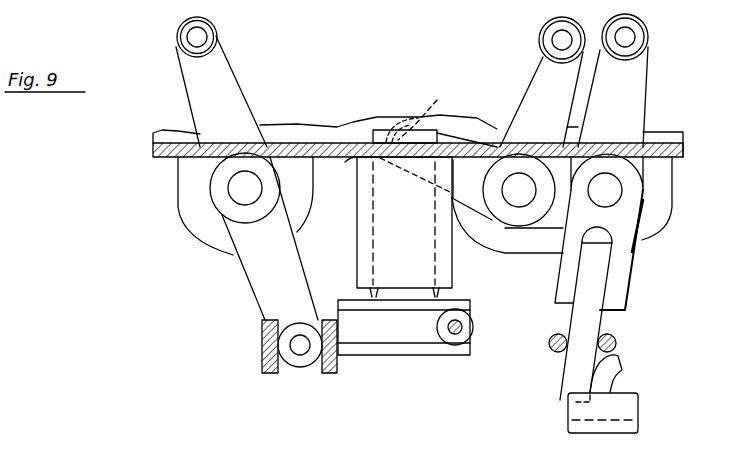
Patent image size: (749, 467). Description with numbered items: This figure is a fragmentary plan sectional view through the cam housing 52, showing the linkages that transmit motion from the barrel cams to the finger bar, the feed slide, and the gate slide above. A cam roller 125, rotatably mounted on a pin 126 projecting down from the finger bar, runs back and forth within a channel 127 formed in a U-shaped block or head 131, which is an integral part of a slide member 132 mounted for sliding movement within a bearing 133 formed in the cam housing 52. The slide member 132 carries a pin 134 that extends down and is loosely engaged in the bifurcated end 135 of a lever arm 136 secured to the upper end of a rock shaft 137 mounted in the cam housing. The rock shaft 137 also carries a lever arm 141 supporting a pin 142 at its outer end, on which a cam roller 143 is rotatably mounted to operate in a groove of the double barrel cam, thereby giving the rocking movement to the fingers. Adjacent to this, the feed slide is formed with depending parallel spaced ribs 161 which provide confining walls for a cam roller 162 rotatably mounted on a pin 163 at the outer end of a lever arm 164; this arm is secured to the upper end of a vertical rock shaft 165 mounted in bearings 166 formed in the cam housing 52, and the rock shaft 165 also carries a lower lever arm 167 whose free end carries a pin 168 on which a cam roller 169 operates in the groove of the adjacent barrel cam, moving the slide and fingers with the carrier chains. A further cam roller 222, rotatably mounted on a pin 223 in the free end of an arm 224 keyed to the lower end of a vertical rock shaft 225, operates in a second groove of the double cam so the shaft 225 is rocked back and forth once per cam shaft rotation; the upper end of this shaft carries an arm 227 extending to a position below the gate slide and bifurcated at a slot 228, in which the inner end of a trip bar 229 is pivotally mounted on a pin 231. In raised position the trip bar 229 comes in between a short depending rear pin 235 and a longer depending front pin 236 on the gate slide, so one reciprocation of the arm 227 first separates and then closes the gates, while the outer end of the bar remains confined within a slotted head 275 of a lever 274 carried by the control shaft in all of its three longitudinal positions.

The cam housing 52 is at (303, 131).
The cam roller 125 is at (463, 320).
The pin 126 is at (462, 331).
The channel 127 is at (413, 340).
The U-shaped block or head 131 is at (380, 352).
The slide member 132 is at (380, 132).
The bearing 133 is at (398, 227).
The pin 134 is at (423, 139).
The bifurcated end 135 is at (399, 130).
The lever arm 136 is at (507, 206).
The rock shaft 137 is at (519, 190).
The lever arm 141 is at (541, 99).
The pin 142 is at (556, 40).
The cam roller 143 is at (547, 46).
The depending parallel spaced ribs 161 is at (261, 366).
The cam roller 162 is at (305, 360).
The pin 163 is at (300, 348).
The lever arm 164 is at (270, 238).
The vertical rock shaft 165 is at (245, 188).
The bearings 166 is at (185, 187).
The lower lever arm 167 is at (228, 72).
The pin 168 is at (190, 38).
The cam roller 169 is at (213, 34).
The cam roller 222 is at (640, 47).
The pin 223 is at (628, 38).
The arm 224 is at (640, 95).
The vertical rock shaft 225 is at (607, 180).
The arm 227 is at (622, 273).
The slot 228 is at (588, 229).
The trip bar 229 is at (598, 322).
The pin 231 is at (635, 249).
The short depending rear pin 235 is at (617, 342).
The longer depending front pin 236 is at (554, 351).
The lever 274 is at (614, 376).
The slotted head 275 is at (636, 407).